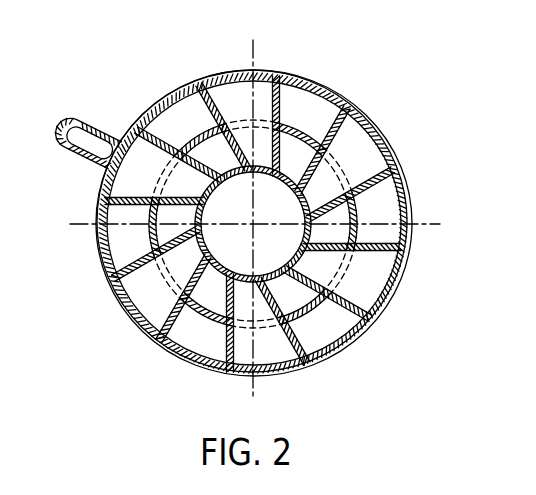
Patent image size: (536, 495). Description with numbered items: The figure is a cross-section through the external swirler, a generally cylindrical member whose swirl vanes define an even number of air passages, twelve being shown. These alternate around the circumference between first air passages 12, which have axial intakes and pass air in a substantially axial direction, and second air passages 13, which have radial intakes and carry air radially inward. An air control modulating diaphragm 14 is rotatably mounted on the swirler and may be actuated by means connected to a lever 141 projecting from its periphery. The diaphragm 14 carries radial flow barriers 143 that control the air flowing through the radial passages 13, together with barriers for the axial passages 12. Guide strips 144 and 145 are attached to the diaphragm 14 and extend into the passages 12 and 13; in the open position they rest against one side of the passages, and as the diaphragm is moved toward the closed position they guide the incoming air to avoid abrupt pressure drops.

The first air passages 12 is at (208, 153).
The second air passages 13 is at (243, 93).
The control diaphragm 14 is at (100, 195).
The lever 141 is at (94, 119).
The radial flow barriers 143 is at (328, 92).
The guide strip 144 is at (378, 183).
The guide strip 145 is at (345, 239).